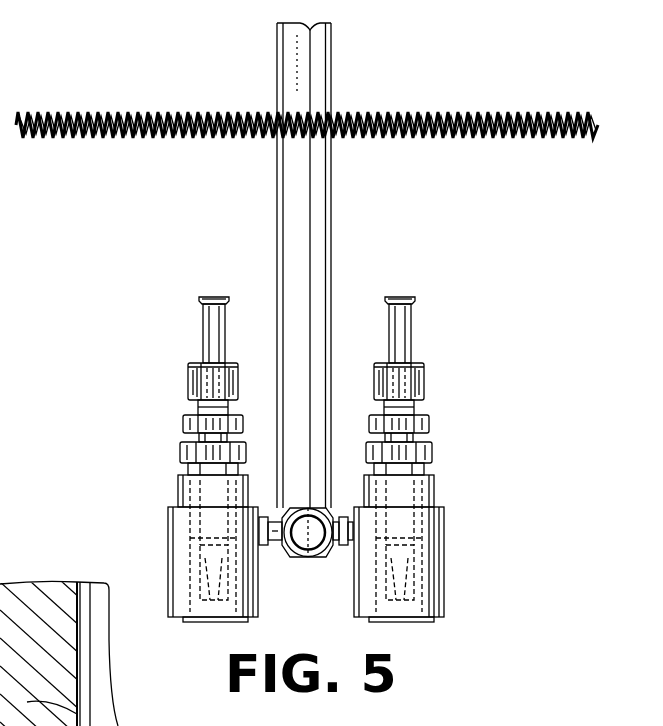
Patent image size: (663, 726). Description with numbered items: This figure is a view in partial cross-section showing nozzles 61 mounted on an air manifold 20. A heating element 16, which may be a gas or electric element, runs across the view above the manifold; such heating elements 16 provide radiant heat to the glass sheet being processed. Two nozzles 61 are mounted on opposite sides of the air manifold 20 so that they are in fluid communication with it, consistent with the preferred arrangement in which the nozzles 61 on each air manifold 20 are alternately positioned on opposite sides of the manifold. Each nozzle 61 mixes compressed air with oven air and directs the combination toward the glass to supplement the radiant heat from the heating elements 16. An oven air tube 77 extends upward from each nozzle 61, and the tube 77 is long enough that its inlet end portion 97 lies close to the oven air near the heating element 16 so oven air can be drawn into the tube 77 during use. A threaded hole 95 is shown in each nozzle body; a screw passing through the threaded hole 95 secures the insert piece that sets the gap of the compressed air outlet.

The heating elements 16 is at (467, 134).
The air manifold 20 is at (330, 520).
The nozzle 61 is at (187, 533).
The tube 77 is at (206, 340).
The threaded hole 95 is at (256, 588).
The inlet end portion 97 is at (207, 297).